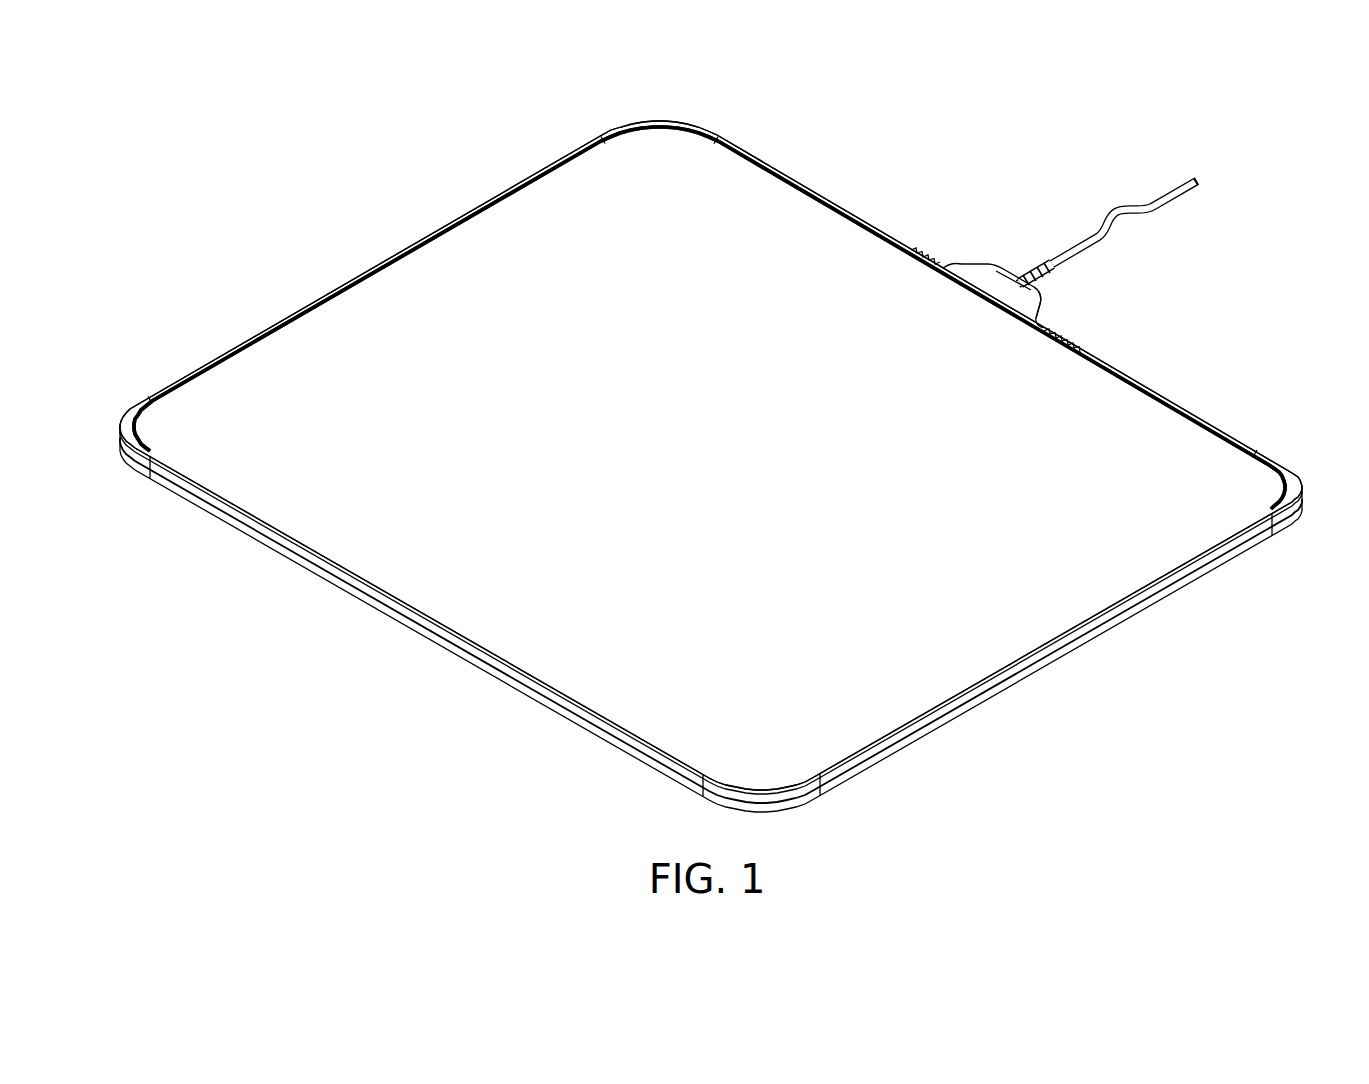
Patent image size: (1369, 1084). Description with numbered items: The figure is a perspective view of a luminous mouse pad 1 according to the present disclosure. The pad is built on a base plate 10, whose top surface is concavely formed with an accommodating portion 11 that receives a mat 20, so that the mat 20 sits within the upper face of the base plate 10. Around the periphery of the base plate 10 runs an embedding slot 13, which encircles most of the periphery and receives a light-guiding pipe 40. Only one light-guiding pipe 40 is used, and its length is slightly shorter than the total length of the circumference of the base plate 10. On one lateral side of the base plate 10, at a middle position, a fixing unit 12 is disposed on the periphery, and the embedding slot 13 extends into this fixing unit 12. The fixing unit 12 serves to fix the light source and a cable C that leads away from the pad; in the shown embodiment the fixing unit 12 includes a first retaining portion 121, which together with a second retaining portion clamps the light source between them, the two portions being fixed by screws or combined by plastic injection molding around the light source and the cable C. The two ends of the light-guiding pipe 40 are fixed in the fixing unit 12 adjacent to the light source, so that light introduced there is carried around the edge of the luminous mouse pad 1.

The luminous mouse pad 1 is at (161, 137).
The base plate 10 is at (852, 210).
The accommodating portion 11 is at (1190, 412).
The fixing unit 12 is at (966, 270).
The first retaining portion 121 is at (1030, 303).
The embedding slot 13 is at (1073, 640).
The mat 20 is at (1216, 458).
The light-guiding pipe 40 is at (1016, 691).
The cable C is at (1071, 239).